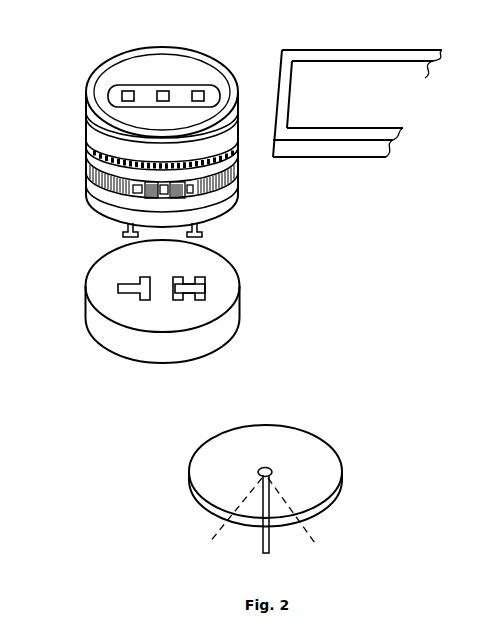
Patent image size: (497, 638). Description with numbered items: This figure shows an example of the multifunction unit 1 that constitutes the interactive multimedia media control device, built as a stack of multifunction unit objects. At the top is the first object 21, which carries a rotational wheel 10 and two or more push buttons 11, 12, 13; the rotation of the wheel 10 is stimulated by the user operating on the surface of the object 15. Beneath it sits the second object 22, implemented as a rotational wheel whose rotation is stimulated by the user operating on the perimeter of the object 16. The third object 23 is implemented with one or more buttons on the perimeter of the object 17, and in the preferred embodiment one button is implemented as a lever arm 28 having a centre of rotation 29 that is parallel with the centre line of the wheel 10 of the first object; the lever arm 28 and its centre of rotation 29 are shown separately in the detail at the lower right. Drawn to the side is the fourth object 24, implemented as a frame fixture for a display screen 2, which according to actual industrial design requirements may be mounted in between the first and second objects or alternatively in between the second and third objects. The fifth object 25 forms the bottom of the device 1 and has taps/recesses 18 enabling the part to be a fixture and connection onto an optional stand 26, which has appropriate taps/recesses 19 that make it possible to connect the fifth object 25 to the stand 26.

The multifunction unit 1 is at (86, 80).
The display screen 2 is at (385, 70).
The rotational wheel 10 is at (93, 72).
The push button 11 is at (126, 88).
The push button 12 is at (163, 87).
The push button 13 is at (200, 88).
The surface of the object 15 is at (238, 80).
The perimeter of the object 16 is at (240, 163).
The perimeter of the object 17 is at (238, 192).
The taps/recesses 18 is at (123, 237).
The taps/recesses 19 is at (118, 288).
The first object 21 is at (86, 94).
The second object 22 is at (86, 121).
The third object 23 is at (88, 163).
The fourth object 24 is at (344, 152).
The fifth object 25 is at (88, 198).
The stand 26 is at (88, 318).
The lever arm 28 is at (130, 195).
The centre of rotation 29 is at (265, 466).